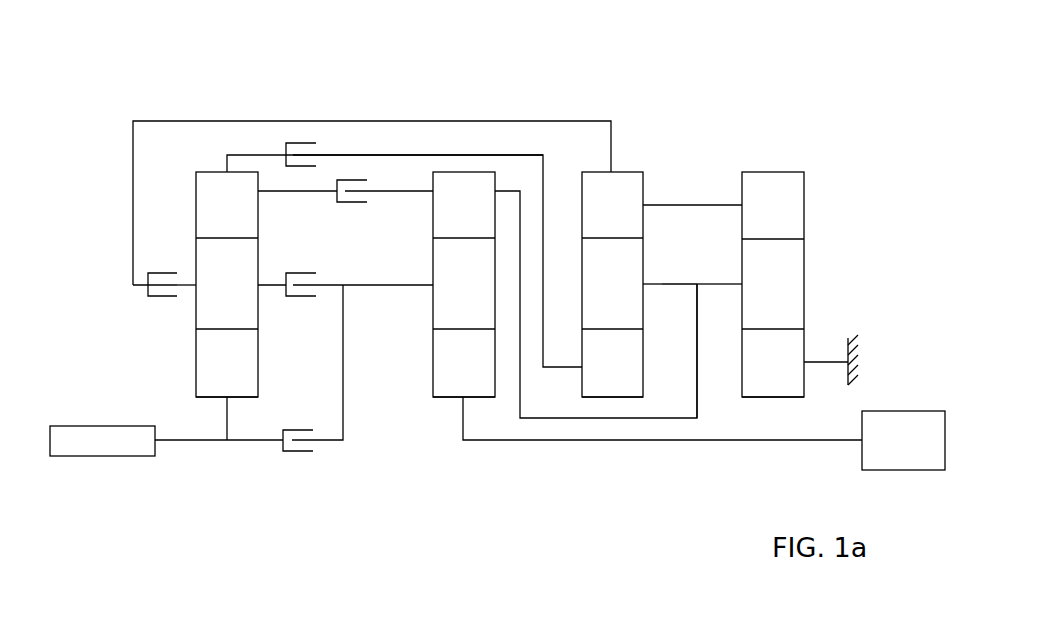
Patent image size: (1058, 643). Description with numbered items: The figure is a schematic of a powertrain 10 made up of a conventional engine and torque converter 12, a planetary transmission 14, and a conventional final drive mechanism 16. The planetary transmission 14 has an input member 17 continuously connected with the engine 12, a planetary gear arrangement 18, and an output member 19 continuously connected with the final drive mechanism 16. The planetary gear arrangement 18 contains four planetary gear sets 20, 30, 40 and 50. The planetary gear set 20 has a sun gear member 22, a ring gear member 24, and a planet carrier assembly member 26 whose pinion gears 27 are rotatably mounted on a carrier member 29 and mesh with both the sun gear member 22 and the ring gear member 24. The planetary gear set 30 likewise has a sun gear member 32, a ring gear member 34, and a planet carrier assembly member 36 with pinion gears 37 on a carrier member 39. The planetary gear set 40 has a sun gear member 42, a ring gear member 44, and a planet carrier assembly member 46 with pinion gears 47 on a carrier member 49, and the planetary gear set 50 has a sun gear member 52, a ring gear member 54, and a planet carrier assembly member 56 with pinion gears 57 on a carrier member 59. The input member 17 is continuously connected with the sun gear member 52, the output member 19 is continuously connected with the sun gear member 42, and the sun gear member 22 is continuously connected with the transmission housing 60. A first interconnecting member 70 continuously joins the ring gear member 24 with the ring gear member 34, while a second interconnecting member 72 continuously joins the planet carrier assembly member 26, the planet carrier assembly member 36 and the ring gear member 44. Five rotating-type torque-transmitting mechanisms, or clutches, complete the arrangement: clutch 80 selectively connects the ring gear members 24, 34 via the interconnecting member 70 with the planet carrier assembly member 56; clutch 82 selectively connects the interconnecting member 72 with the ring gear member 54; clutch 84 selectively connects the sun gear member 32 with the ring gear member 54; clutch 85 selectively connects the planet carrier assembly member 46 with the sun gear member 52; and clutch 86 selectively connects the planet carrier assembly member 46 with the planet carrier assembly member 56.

The powertrain 10 is at (306, 76).
The engine and torque converter 12 is at (102, 426).
The planetary transmission 14 is at (399, 75).
The final drive mechanism 16 is at (898, 411).
The input member 17 is at (178, 442).
The planetary gear arrangement 18 is at (497, 73).
The output member 19 is at (803, 443).
The planetary gear set 20 is at (759, 304).
The sun gear member 22 is at (772, 400).
The ring gear member 24 is at (773, 216).
The planet carrier assembly member 26 is at (736, 279).
The pinion gears 27 is at (773, 301).
The carrier member 29 is at (722, 286).
The planetary gear set 30 is at (616, 254).
The sun gear member 32 is at (612, 374).
The ring gear member 34 is at (612, 216).
The planet carrier assembly member 36 is at (651, 279).
The pinion gears 37 is at (612, 301).
The carrier member 39 is at (659, 286).
The planetary gear set 40 is at (451, 311).
The sun gear member 42 is at (460, 402).
The ring gear member 44 is at (464, 216).
The planet carrier assembly member 46 is at (425, 272).
The pinion gears 47 is at (464, 301).
The carrier member 49 is at (392, 283).
The planetary gear set 50 is at (227, 324).
The sun gear member 52 is at (226, 400).
The ring gear member 54 is at (227, 216).
The planet carrier assembly member 56 is at (191, 294).
The pinion gears 57 is at (227, 301).
The carrier member 59 is at (185, 290).
The transmission housing 60 is at (856, 350).
The first interconnecting member 70 is at (700, 204).
The second interconnecting member 72 is at (684, 286).
The clutch 80 is at (189, 272).
The clutch 82 is at (362, 188).
The clutch 84 is at (310, 150).
The clutch 85 is at (311, 447).
The clutch 86 is at (318, 293).